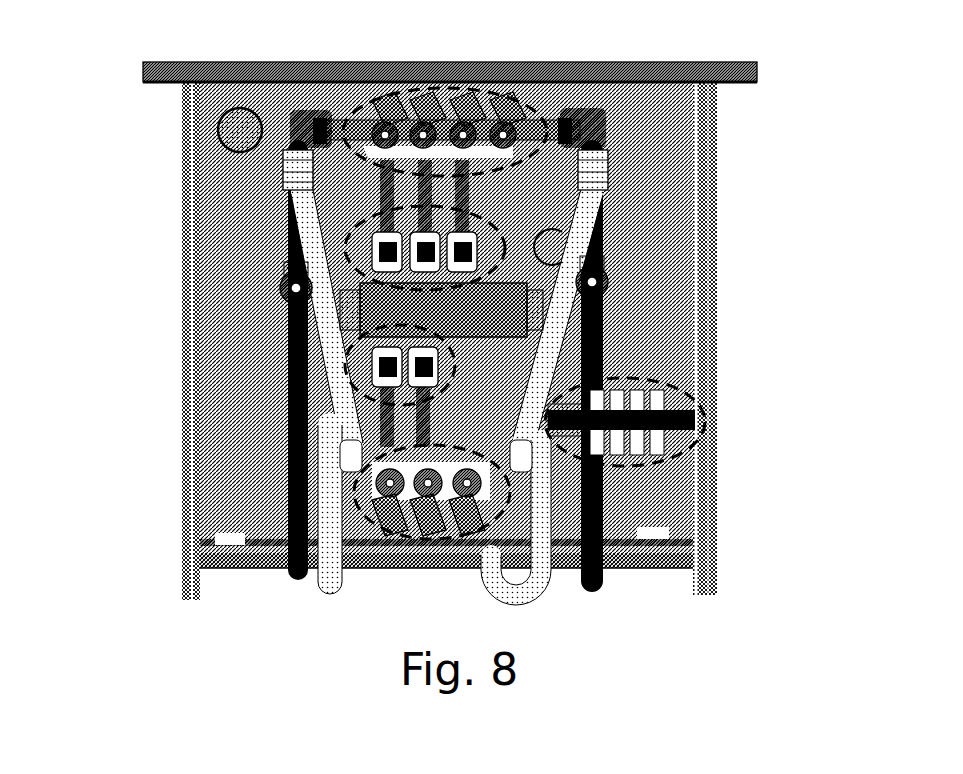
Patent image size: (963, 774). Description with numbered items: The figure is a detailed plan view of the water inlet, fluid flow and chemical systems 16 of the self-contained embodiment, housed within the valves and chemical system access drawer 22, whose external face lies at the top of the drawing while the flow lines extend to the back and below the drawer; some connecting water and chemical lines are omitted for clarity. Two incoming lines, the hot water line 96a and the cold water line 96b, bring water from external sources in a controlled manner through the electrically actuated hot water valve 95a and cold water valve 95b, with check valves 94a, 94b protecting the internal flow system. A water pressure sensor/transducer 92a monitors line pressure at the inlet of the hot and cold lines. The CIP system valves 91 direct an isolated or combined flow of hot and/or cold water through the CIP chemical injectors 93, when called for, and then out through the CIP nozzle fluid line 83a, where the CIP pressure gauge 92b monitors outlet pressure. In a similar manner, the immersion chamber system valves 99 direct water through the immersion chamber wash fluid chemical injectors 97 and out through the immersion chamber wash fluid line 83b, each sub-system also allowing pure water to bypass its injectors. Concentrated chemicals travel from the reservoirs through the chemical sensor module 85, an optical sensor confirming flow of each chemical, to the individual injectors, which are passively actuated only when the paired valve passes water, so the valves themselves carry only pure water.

The water inlet, fluid flow & chemical systems 16 is at (846, 110).
The valves & chemical system access drawer 22 is at (238, 68).
The CIP (clean in place) nozzle fluid line 83a is at (326, 478).
The immersion chamber wash fluid line 83b is at (546, 500).
The chemical sensor module 85 is at (706, 423).
The CIP (clean in place) system valves 91 is at (505, 95).
The water pressure sensor/transducer 92a is at (215, 130).
The CIP (clean in place) pressure gauge 92b is at (548, 247).
The CIP (clean in place) chemical injectors 93 is at (492, 215).
The check valve 94a is at (286, 228).
The check valve 94b is at (600, 226).
The hot water valve 95a is at (286, 292).
The cold water valve 95b is at (604, 285).
The hot water line 96a is at (297, 407).
The cold water line 96b is at (600, 347).
The immersion chamber wash fluid chemical injectors 97 is at (358, 352).
The immersion chamber system valves 99 is at (424, 543).